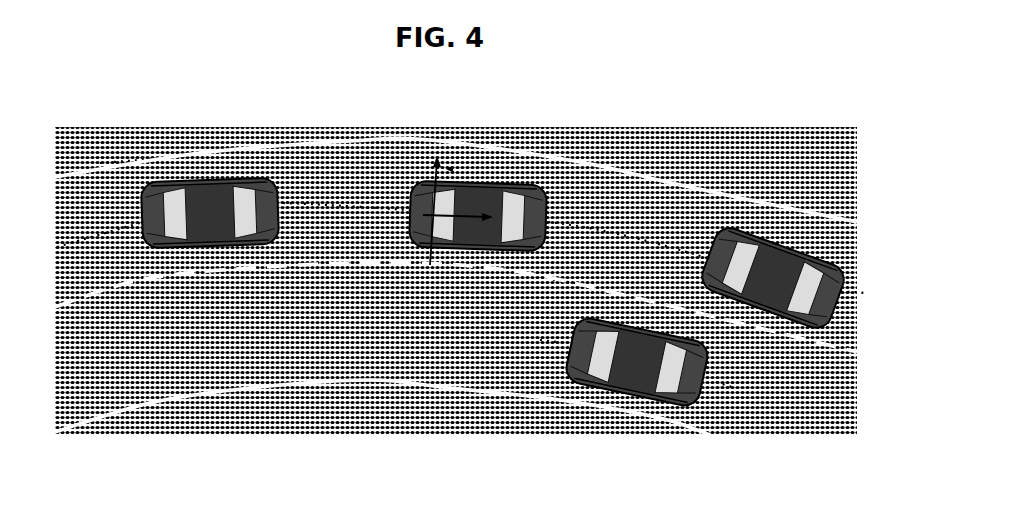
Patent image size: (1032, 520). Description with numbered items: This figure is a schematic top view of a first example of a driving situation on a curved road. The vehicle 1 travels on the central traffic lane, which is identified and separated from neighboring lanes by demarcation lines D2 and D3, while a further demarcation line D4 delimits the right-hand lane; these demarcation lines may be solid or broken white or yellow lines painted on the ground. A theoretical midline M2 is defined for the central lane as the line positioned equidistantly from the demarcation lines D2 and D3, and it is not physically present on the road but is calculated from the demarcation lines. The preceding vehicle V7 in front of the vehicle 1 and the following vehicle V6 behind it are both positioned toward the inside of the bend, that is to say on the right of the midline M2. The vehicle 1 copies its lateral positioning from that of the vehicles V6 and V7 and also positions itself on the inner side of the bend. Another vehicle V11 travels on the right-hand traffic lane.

The following vehicle V6 is at (193, 185).
The ego vehicle 1 is at (468, 187).
The midline M2 is at (592, 228).
The preceding vehicle V7 is at (752, 238).
The demarcation line D2 is at (803, 215).
The demarcation line D3 is at (780, 332).
The demarcation line D4 is at (508, 395).
The other vehicle V11 is at (672, 400).